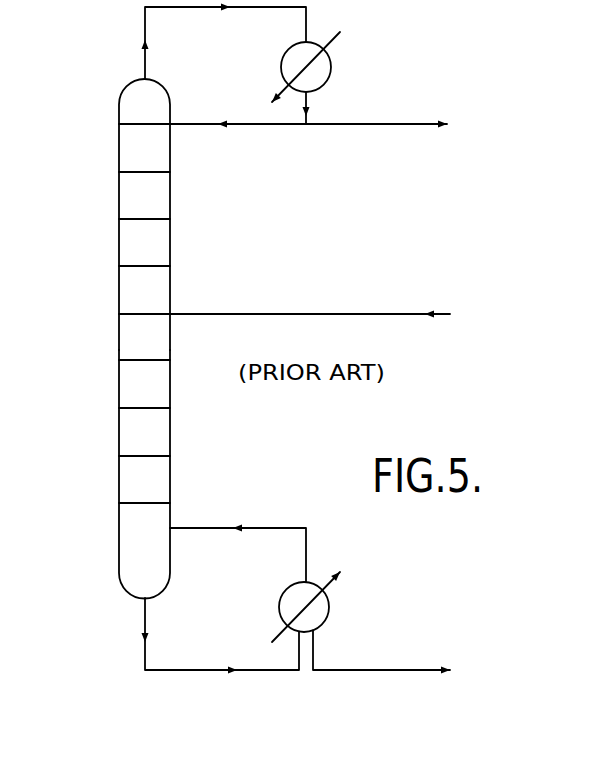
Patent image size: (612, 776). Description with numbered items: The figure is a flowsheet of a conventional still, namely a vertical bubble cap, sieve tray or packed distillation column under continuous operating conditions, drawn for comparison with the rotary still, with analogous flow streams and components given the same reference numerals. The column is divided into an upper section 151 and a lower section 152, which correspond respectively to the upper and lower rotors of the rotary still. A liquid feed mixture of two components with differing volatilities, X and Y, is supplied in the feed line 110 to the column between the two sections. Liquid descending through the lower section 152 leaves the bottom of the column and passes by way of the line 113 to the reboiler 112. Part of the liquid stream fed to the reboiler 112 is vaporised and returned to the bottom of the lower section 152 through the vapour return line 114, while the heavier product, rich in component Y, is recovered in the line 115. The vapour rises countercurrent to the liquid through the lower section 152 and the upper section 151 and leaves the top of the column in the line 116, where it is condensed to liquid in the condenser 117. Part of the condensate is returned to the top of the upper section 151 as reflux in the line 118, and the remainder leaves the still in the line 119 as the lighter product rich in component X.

The feed line 110 is at (292, 314).
The reboiler 112 is at (329, 620).
The line to reboiler 113 is at (188, 670).
The vapour return line 114 is at (258, 528).
The heavier product line 115 is at (398, 670).
The vapour outlet line 116 is at (258, 7).
The condenser 117 is at (331, 70).
The reflux line 118 is at (277, 124).
The lighter product line 119 is at (333, 124).
The upper column section 151 is at (119, 200).
The lower column section 152 is at (119, 428).